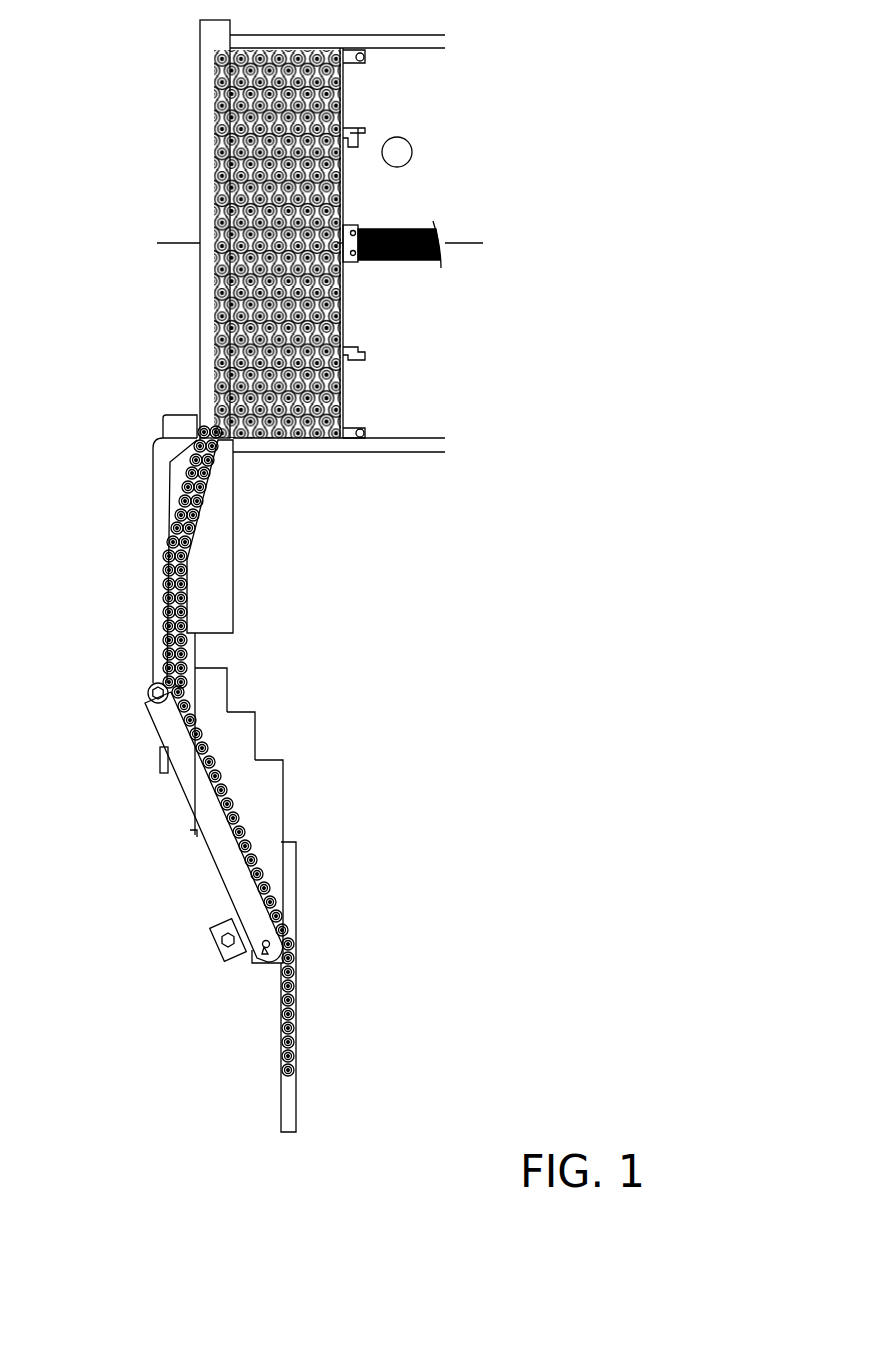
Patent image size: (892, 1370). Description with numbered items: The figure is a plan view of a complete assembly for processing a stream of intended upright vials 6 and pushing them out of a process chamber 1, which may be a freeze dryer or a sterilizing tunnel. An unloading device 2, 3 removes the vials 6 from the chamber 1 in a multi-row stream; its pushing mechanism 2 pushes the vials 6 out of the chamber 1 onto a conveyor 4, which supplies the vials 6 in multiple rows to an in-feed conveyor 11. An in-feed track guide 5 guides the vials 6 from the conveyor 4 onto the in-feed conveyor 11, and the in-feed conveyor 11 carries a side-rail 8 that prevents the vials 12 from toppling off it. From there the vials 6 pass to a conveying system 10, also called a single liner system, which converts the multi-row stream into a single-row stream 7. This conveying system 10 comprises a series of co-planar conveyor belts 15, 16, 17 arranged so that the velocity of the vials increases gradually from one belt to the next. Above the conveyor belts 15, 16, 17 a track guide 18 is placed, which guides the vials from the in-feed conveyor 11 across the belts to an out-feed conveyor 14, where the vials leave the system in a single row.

The process chamber 1 is at (397, 152).
The pushing mechanism 2 is at (400, 260).
The unloading device 3 is at (338, 325).
The conveyor 4 is at (208, 145).
The in-feed track guide 5 is at (212, 547).
The vials 6 is at (190, 323).
The single-row stream 7 is at (302, 1026).
The side-rail 8 is at (162, 547).
The conveying system 10 is at (328, 716).
The in-feed conveyor 11 is at (182, 424).
The vials 12 is at (165, 604).
The out-feed conveyor 14 is at (285, 1098).
The conveyor belt 15 is at (212, 683).
The conveyor belt 16 is at (245, 720).
The conveyor belt 17 is at (275, 773).
The track guide 18 is at (235, 875).